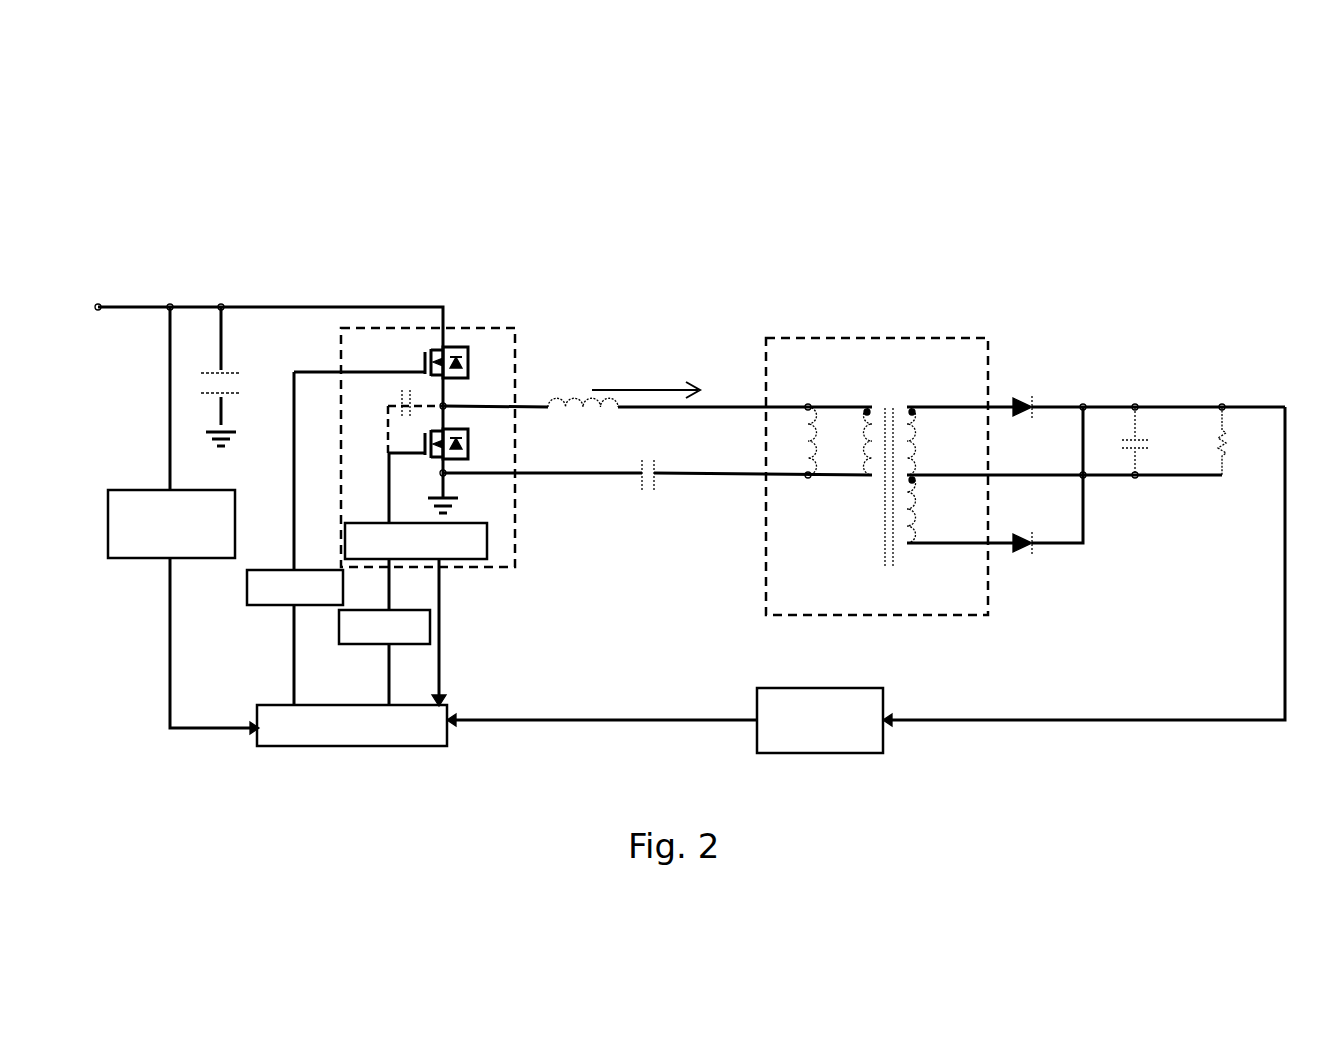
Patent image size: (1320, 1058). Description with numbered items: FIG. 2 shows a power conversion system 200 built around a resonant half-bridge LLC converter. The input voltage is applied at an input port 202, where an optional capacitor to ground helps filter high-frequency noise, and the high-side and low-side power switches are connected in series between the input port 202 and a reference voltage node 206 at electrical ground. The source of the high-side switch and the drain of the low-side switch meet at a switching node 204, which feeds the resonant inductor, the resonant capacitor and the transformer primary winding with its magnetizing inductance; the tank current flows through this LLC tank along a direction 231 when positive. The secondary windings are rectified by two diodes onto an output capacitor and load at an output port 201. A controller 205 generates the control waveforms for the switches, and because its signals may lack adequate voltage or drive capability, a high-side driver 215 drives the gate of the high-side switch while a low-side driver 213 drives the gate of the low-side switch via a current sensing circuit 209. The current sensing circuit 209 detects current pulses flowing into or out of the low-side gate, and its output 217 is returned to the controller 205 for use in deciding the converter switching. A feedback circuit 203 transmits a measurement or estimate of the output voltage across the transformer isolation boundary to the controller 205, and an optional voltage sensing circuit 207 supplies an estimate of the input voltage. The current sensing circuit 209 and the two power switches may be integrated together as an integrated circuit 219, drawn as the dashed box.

The power conversion system 200 is at (706, 197).
The output port 201 is at (1223, 406).
The input port 202 is at (172, 306).
The feedback circuit 203 is at (885, 697).
The switching node 204 is at (450, 397).
The controller 205 is at (285, 750).
The reference voltage node 206 is at (450, 467).
The voltage sensing circuit 207 is at (108, 520).
The current sensing circuit 209 is at (489, 533).
The low-side driver 213 is at (425, 623).
The high-side driver 215 is at (247, 590).
The output of current sensing circuit 217 is at (440, 662).
The integrated circuit 219 is at (484, 321).
The direction of tank current 231 is at (669, 386).